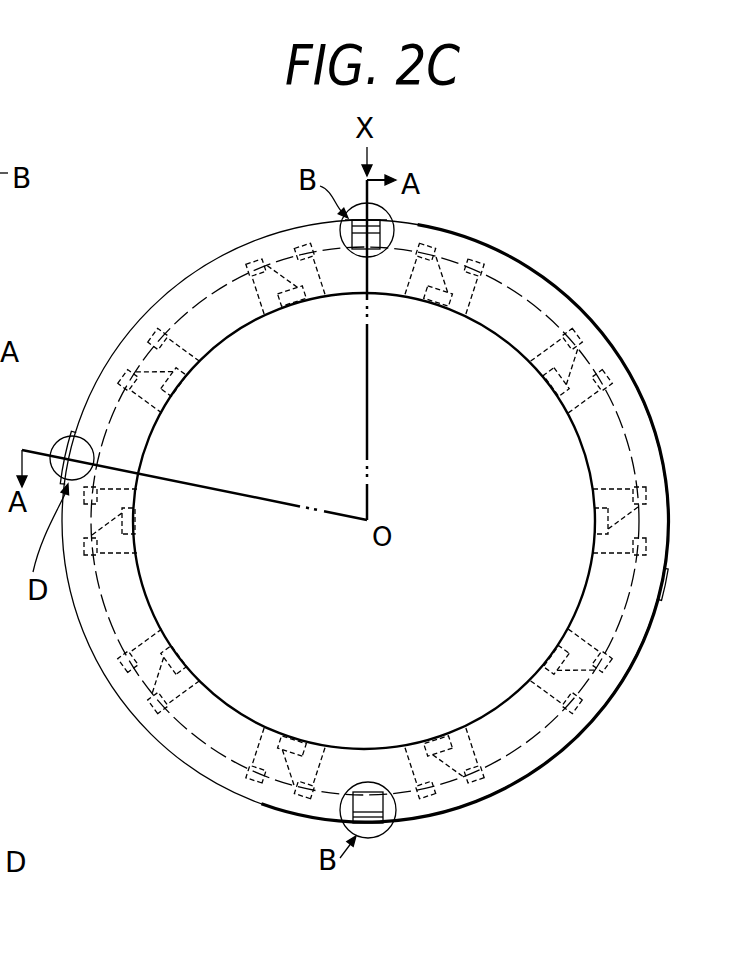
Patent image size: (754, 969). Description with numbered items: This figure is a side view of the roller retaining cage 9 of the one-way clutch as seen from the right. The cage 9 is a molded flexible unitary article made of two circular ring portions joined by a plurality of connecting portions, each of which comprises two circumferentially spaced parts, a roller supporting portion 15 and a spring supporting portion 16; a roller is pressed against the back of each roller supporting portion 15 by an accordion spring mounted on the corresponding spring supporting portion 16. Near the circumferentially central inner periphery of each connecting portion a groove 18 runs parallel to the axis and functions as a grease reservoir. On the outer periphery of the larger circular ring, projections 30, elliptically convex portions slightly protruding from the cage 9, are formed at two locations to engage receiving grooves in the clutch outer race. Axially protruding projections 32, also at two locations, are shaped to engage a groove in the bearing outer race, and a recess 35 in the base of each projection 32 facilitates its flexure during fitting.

The roller retaining cage 9 is at (547, 279).
The roller supporting portion 15 is at (271, 303).
The spring supporting portion 16 is at (327, 293).
The groove 18 is at (552, 387).
The projection 30 is at (668, 584).
The projection 32 is at (0, 213).
The recess 35 is at (0, 262).